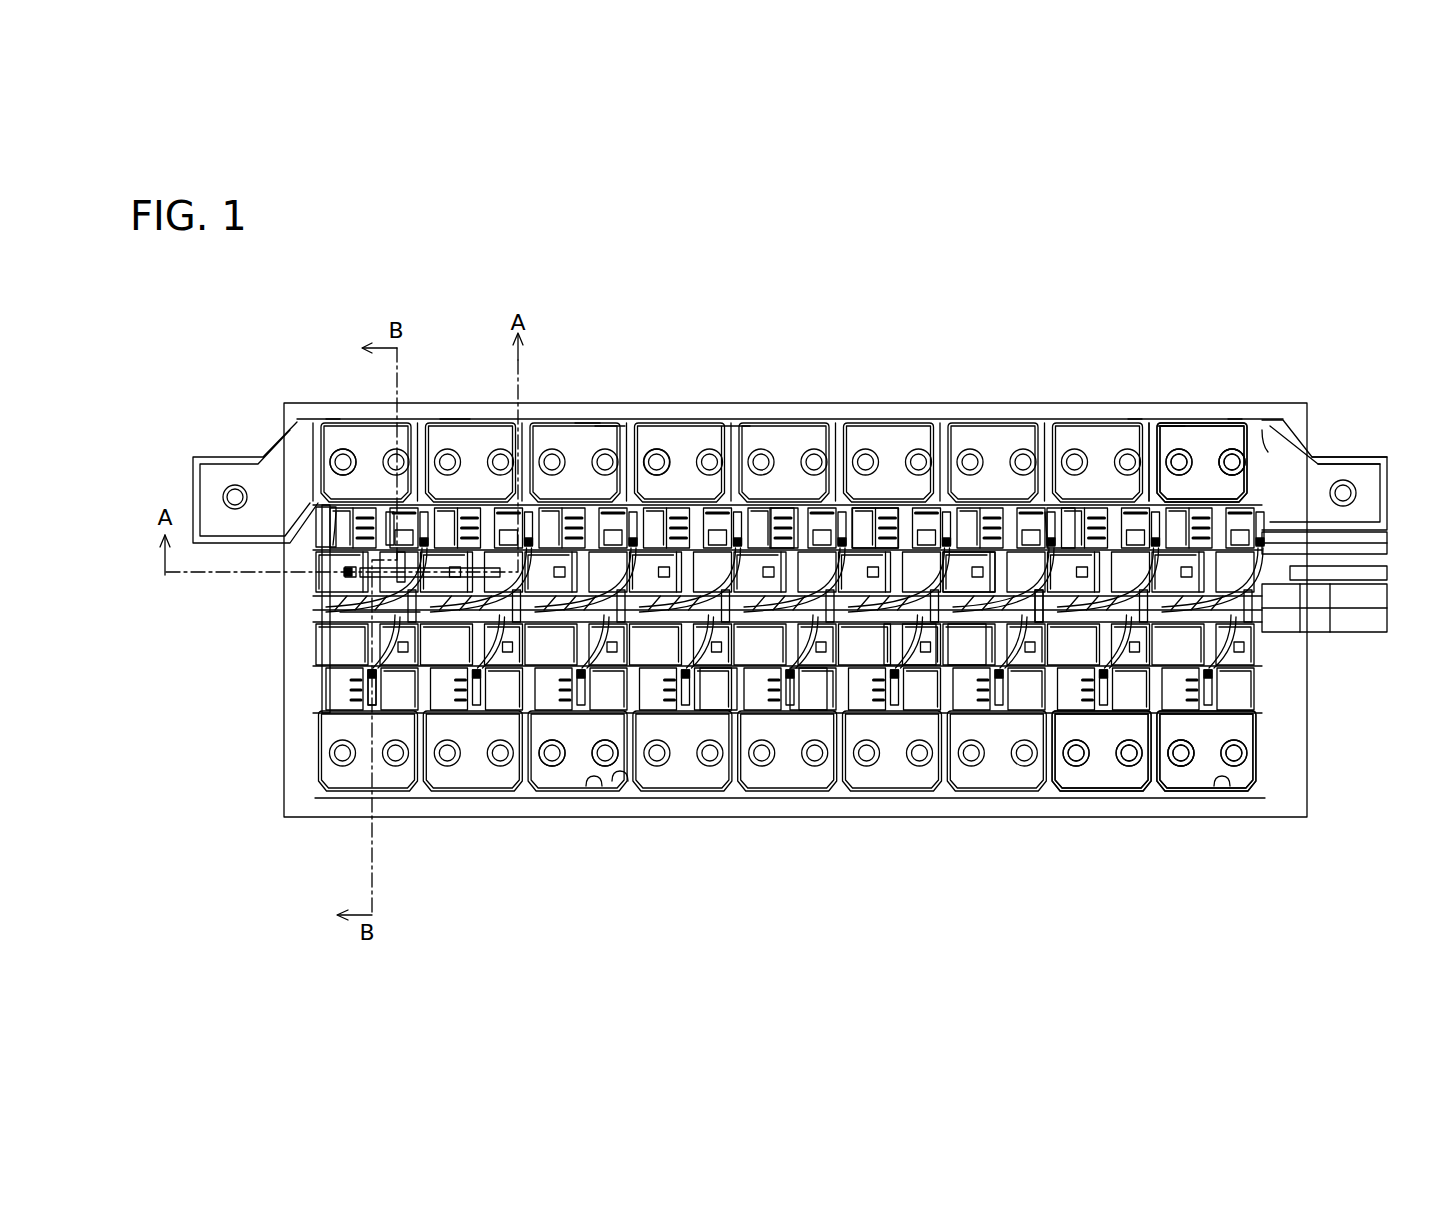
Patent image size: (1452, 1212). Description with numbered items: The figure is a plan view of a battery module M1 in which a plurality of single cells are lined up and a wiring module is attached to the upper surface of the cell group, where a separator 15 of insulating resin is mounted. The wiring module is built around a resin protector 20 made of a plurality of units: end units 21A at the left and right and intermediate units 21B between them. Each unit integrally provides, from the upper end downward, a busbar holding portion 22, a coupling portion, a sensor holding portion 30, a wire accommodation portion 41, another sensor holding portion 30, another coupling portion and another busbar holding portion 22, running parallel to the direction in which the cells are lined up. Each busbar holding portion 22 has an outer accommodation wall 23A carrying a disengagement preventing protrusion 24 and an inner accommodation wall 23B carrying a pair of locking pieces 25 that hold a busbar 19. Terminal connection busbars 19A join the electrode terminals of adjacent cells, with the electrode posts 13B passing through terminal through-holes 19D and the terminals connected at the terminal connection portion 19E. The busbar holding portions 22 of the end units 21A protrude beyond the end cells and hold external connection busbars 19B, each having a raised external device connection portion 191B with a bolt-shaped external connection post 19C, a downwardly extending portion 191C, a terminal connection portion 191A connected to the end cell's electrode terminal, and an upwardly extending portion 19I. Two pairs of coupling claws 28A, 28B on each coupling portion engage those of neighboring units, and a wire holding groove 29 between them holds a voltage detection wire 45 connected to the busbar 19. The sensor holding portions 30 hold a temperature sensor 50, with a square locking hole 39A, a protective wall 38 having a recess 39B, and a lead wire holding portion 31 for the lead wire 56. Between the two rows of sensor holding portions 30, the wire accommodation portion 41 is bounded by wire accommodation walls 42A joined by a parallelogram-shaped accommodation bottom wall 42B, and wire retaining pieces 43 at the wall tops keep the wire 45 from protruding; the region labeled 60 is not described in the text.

The battery module M1 is at (845, 318).
The electrode post 13B is at (333, 545).
The separator 15 is at (1302, 432).
The busbar 19 is at (618, 762).
The terminal connection busbar 19A is at (1178, 440).
The external connection busbar 19B is at (1397, 452).
The external connection post 19C is at (235, 485).
The terminal through-hole 19D is at (333, 419).
The terminal connection portion 19E is at (1168, 440).
The upwardly extending portion 19I is at (1302, 540).
The terminal connection portion 191A is at (346, 450).
The external device connection portion 191B is at (213, 475).
The downwardly extending portion 191C is at (1293, 447).
The resin protector 20 is at (449, 418).
The unit at end portion 21A is at (405, 798).
The unit 21B is at (490, 798).
The busbar holding portion 22 is at (582, 425).
The accommodation wall 23A is at (605, 426).
The accommodation wall 23B is at (735, 427).
The disengagement preventing protrusion 24 is at (645, 430).
The locking piece 25 is at (684, 432).
The coupling claw 28A is at (800, 548).
The coupling claw 28B is at (880, 548).
The wire holding groove 29 is at (945, 545).
The sensor holding portion 30 is at (402, 548).
The lead wire holding portion 31 is at (372, 672).
The protective wall 38 is at (322, 510).
The locking hole 39A is at (345, 572).
The recess 39B is at (400, 578).
The wire accommodation portion 41 is at (895, 665).
The wire accommodation wall 42A is at (1036, 610).
The accommodation bottom wall 42B is at (980, 665).
The wire retaining piece 43 is at (1062, 500).
The voltage detection wire 45 is at (1330, 614).
The temperature sensor 50 is at (390, 540).
The lead wire 56 is at (395, 612).
The end plate assembly 60 is at (1340, 448).